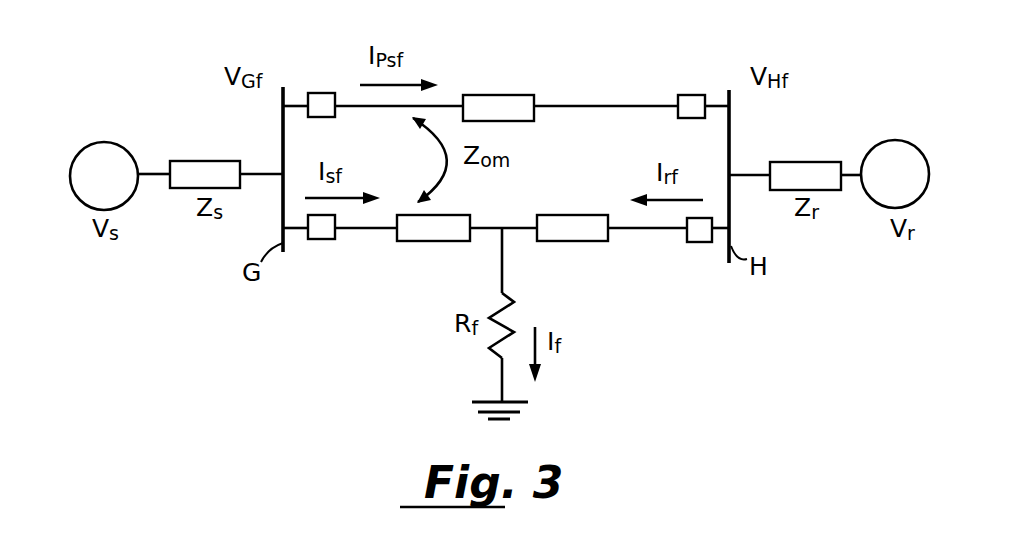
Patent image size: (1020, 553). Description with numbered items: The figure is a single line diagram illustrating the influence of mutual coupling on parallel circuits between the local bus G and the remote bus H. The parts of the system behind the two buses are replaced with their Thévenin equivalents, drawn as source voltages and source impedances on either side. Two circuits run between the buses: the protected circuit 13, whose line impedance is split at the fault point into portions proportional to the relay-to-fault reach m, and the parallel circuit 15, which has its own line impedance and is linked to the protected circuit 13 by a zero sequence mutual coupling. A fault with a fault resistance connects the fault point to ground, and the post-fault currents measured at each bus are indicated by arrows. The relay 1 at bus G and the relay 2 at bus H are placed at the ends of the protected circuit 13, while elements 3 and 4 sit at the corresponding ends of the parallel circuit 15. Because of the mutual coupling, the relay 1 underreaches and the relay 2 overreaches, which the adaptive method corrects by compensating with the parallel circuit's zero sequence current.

The relay 1 is at (321, 247).
The relay 2 is at (700, 251).
The parallel line terminal relay at bus G 3 is at (321, 88).
The parallel line terminal relay at bus H 4 is at (691, 89).
The protected circuit 13 is at (662, 230).
The parallel circuit 15 is at (592, 106).